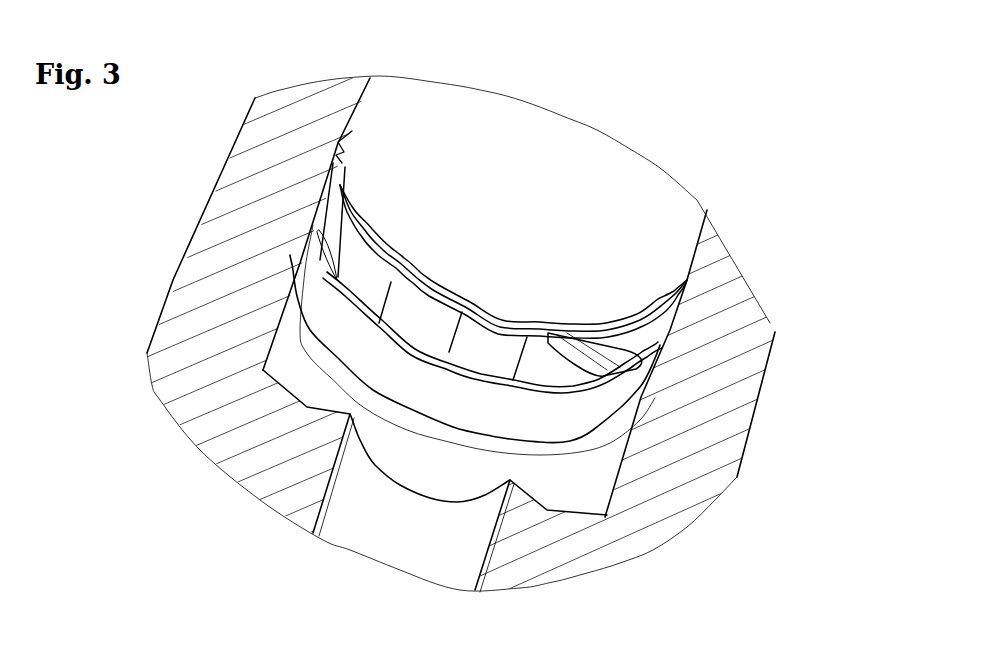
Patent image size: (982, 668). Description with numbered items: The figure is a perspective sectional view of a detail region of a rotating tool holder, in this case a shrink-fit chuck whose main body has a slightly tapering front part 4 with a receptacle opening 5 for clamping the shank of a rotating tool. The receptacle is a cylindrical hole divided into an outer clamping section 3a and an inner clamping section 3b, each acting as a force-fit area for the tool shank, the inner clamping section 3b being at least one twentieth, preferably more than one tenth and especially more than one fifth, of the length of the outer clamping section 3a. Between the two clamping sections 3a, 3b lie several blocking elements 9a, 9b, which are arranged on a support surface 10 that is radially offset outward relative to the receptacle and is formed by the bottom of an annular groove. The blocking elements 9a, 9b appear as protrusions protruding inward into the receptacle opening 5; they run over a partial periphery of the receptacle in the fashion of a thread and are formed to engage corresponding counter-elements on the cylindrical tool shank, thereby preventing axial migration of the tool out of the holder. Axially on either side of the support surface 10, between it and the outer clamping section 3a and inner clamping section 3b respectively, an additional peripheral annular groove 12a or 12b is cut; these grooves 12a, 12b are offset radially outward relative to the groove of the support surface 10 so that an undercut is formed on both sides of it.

The outer clamping section 3a is at (633, 218).
The inner clamping section 3b is at (620, 390).
The front part 4 is at (207, 257).
The receptacle opening 5 is at (597, 134).
The blocking element 9a is at (322, 202).
The blocking element 9b is at (635, 350).
The support surface 10 is at (430, 320).
The additional peripheral annular groove 12a is at (680, 287).
The additional peripheral annular groove 12b is at (660, 343).